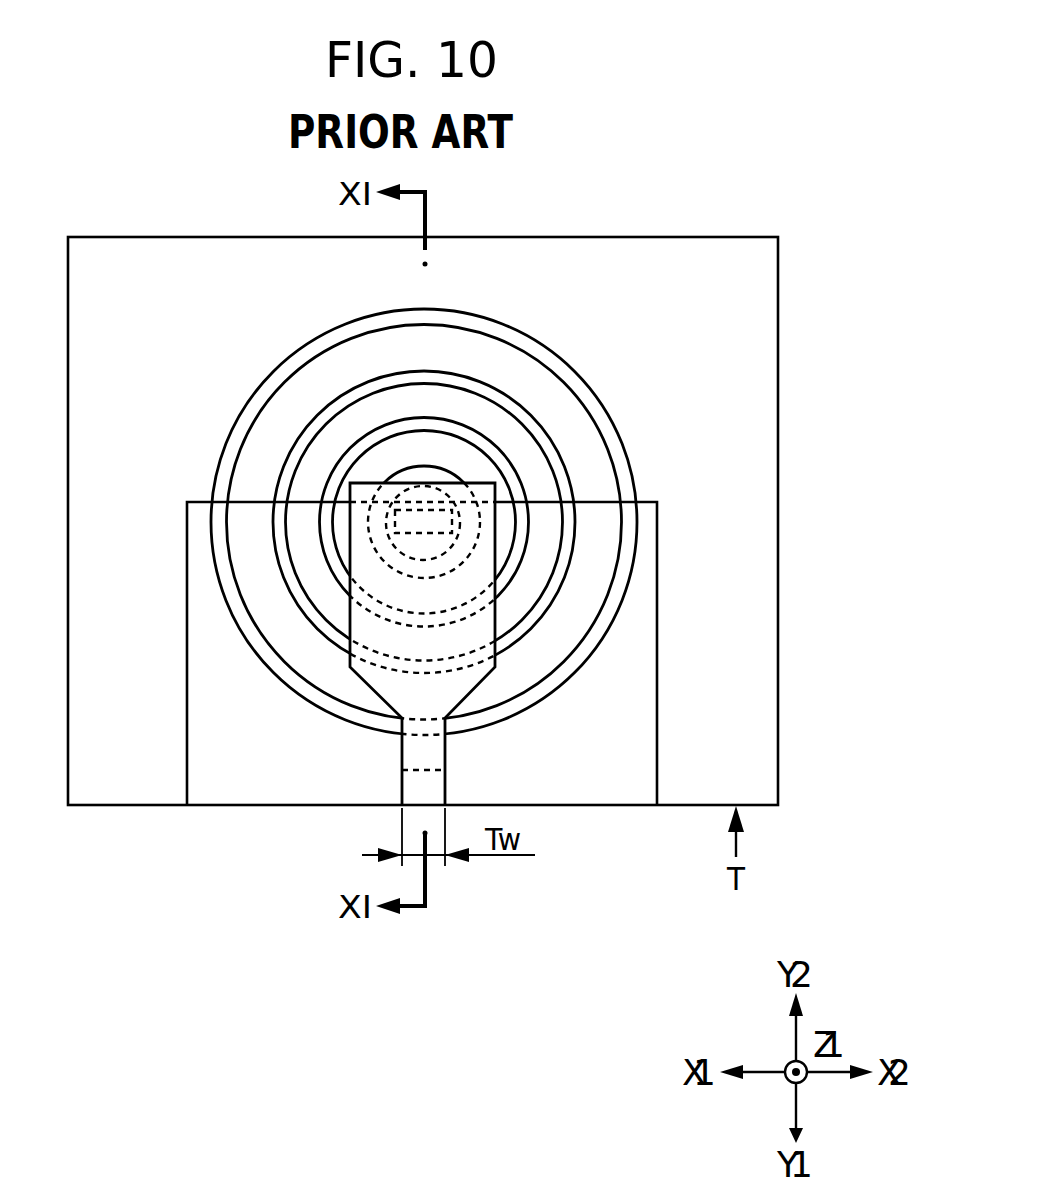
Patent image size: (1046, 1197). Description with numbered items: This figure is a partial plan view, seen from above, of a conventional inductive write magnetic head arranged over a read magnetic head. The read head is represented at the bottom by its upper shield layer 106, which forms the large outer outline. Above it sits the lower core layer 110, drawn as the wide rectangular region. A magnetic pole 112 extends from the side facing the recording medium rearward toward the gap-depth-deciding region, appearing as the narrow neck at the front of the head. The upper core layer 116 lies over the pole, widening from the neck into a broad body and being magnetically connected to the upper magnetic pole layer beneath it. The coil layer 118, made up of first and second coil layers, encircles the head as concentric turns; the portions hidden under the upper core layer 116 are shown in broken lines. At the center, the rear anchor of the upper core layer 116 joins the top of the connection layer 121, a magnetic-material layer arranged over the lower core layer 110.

The upper shield layer 106 is at (778, 640).
The lower core layer 110 is at (657, 557).
The magnetic pole 112 is at (405, 793).
The upper core layer 116 is at (472, 757).
The coil layer 118 is at (254, 374).
The connection layer 121 is at (393, 515).